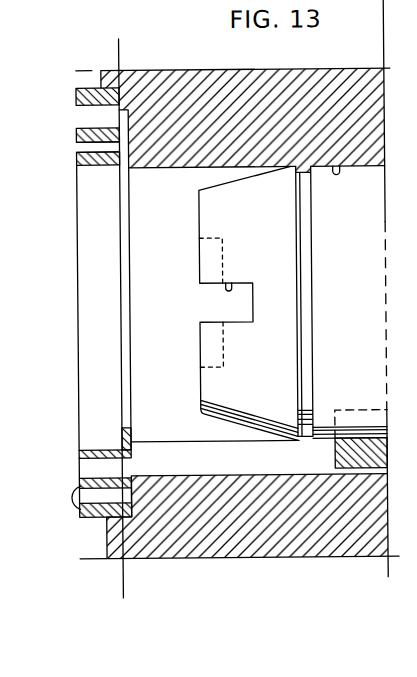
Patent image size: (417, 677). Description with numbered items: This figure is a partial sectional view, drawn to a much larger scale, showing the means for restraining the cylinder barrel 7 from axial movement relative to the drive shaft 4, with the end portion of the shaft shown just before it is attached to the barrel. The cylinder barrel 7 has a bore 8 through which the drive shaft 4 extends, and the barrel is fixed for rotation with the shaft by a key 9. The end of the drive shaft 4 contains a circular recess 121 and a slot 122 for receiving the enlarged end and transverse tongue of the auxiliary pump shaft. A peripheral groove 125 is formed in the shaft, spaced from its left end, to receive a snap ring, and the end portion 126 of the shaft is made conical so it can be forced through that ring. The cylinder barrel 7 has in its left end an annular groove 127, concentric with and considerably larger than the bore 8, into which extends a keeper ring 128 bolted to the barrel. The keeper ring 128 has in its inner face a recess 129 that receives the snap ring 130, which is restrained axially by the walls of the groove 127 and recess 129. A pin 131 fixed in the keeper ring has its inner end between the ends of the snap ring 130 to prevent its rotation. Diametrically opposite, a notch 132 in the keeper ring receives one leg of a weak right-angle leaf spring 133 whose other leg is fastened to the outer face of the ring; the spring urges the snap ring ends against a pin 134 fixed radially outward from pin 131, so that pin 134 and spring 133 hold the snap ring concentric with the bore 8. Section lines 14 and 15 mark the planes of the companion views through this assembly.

The drive shaft 4 is at (365, 209).
The cylinder barrel 7 is at (341, 536).
The bore 8 is at (334, 166).
The key 9 is at (348, 455).
The section line 14 is at (121, 38).
The section line 15 is at (58, 108).
The circular recess 121 is at (214, 367).
The slot 122 is at (225, 283).
The peripheral groove 125 is at (305, 264).
The end portion 126 is at (210, 207).
The annular groove 127 is at (126, 472).
The keeper ring 128 is at (90, 516).
The recess 129 is at (124, 303).
The snap ring 130 is at (128, 420).
The pin 131 is at (82, 150).
The notch 132 is at (98, 480).
The leaf spring 133 is at (97, 452).
The pin 134 is at (88, 125).